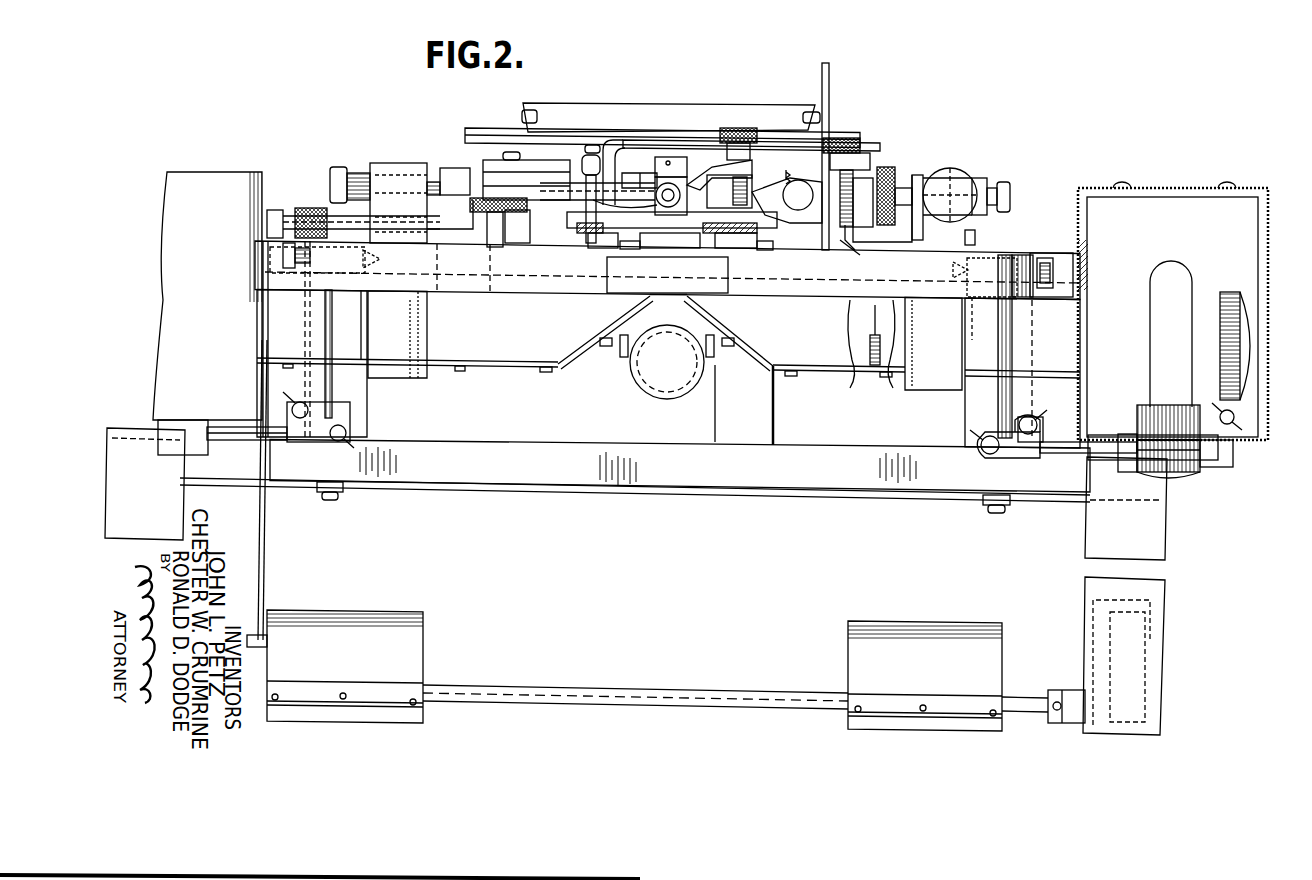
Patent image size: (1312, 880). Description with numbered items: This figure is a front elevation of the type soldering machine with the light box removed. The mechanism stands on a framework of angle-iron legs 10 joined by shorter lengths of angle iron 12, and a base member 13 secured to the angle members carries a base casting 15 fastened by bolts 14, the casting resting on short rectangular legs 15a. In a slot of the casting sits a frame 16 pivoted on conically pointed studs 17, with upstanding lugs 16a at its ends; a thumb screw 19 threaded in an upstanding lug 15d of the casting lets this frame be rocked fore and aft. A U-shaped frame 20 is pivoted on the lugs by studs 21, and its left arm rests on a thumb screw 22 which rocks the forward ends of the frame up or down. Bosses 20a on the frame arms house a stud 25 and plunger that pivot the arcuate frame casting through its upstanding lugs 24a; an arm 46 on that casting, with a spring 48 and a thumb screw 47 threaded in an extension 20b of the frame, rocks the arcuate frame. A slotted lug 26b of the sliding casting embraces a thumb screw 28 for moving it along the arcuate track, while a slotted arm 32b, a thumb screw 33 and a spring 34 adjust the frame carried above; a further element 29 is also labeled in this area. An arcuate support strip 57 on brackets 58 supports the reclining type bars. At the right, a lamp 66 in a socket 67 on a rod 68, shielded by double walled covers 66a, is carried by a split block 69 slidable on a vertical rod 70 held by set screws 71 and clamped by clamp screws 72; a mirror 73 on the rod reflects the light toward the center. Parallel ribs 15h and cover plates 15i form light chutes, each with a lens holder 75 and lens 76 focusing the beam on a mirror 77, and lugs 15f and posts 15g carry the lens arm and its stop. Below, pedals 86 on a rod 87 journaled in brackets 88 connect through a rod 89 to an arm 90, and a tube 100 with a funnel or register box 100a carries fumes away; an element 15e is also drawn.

The legs 10 is at (1145, 529).
The angle iron members 12 is at (1124, 656).
The base member 13 is at (630, 452).
The bolts 14 is at (330, 503).
The base casting 15 is at (565, 290).
The rectangular legs 15a is at (367, 397).
The upstanding lug 15d is at (972, 240).
The column 15e is at (530, 255).
The lugs 15f is at (760, 252).
The posts 15g is at (633, 250).
The parallel ribs 15h is at (540, 350).
The cover plates 15i is at (482, 366).
The frame 16 is at (893, 240).
The upstanding lugs 16a is at (396, 172).
The studs 17 is at (360, 262).
The thumb screw 19 is at (953, 188).
The U-shaped frame 20 is at (482, 178).
The bosses 20a is at (540, 190).
The extension 20b is at (855, 256).
The studs 21 is at (339, 168).
The thumb screw 22 is at (482, 215).
The upstanding lugs 24a is at (591, 232).
The stud 25 is at (872, 196).
The slotted lug 26b is at (783, 180).
The thumb screw 28 is at (802, 190).
The spring 29 is at (790, 170).
The slotted arm 32b is at (712, 165).
The thumb screw 33 is at (736, 128).
The spring 34 is at (780, 240).
The arm 46 is at (888, 170).
The thumb screw 47 is at (852, 145).
The spring 48 is at (850, 190).
The arcuate support strip 57 is at (602, 108).
The brackets 58 is at (530, 138).
The lamp 66 is at (1186, 282).
The double walled covers 66a is at (196, 186).
The sockets 67 is at (1170, 425).
The rods 68 is at (1065, 454).
The block 69 is at (1012, 455).
The vertically extending rods 70 is at (1010, 334).
The set screws 71 is at (285, 255).
The clamp screws 72 is at (1036, 418).
The mirror 73 is at (1243, 300).
The lens holder 75 is at (880, 352).
The lens 76 is at (880, 328).
The mirror 77 is at (667, 362).
The pedals 86 is at (405, 659).
The rod 87 is at (531, 690).
The brackets 88 is at (1076, 676).
The rod 89 is at (260, 510).
The arm 90 is at (272, 230).
The tube 100 is at (634, 380).
The funnel or register box 100a is at (618, 345).